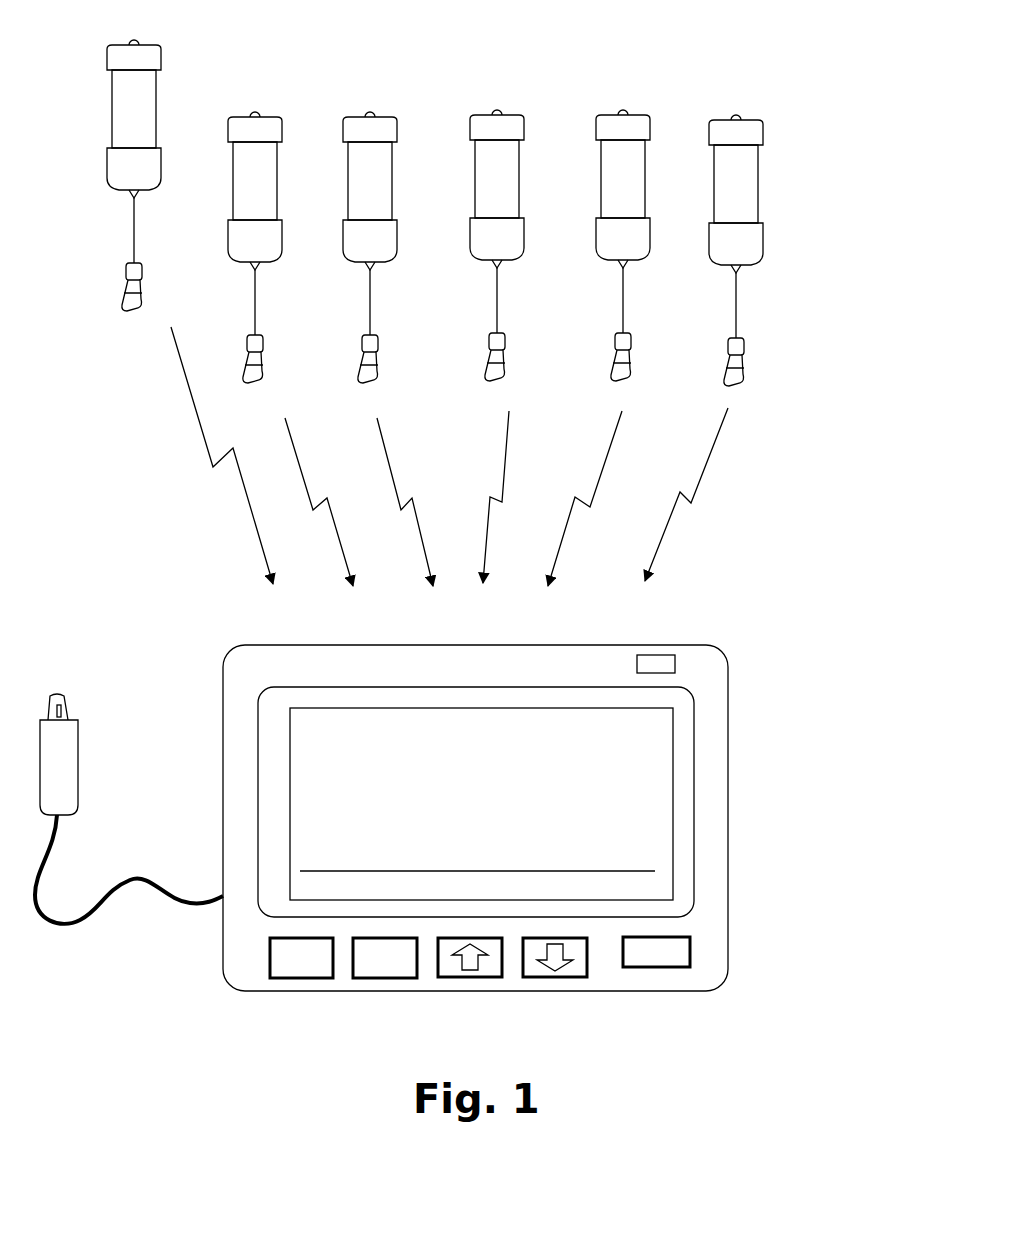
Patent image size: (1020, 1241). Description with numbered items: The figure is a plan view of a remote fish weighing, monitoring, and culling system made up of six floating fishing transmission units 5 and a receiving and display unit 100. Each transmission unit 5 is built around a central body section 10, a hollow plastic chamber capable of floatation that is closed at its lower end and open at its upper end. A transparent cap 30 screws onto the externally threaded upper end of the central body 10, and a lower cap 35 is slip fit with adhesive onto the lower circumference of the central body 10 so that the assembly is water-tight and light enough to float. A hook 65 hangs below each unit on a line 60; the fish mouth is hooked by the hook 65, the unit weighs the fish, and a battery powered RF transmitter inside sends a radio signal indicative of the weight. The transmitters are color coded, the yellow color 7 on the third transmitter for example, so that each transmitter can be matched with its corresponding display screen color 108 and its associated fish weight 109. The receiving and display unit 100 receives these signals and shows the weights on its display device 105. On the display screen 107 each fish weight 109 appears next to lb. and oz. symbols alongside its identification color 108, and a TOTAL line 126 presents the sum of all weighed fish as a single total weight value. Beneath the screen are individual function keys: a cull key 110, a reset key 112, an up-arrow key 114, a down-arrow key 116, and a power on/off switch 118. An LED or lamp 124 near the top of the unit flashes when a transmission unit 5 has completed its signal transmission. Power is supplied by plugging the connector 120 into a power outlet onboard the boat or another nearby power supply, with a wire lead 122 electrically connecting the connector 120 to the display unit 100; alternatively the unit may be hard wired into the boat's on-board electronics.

The transmission unit 5 is at (417, 197).
The transparent cap 30 is at (118, 60).
The central body section 10 is at (118, 113).
The lower cap 35 is at (118, 165).
The tether line 60 is at (134, 199).
The hook 65 is at (123, 295).
The yellow color coding 7 is at (378, 165).
The receiving and display unit 100 is at (201, 623).
The display device 105 is at (256, 700).
The LED or lamp 124 is at (657, 665).
The TOTAL line 126 is at (471, 857).
The display screen color 108 is at (292, 781).
The fish weight 109 is at (655, 776).
The display screen 107 is at (662, 843).
The cull key 110 is at (283, 968).
The reset key 112 is at (370, 968).
The up-arrow key 114 is at (490, 970).
The down-arrow key 116 is at (575, 970).
The power on/off switch 118 is at (680, 960).
The connector 120 is at (78, 755).
The wire lead 122 is at (42, 905).